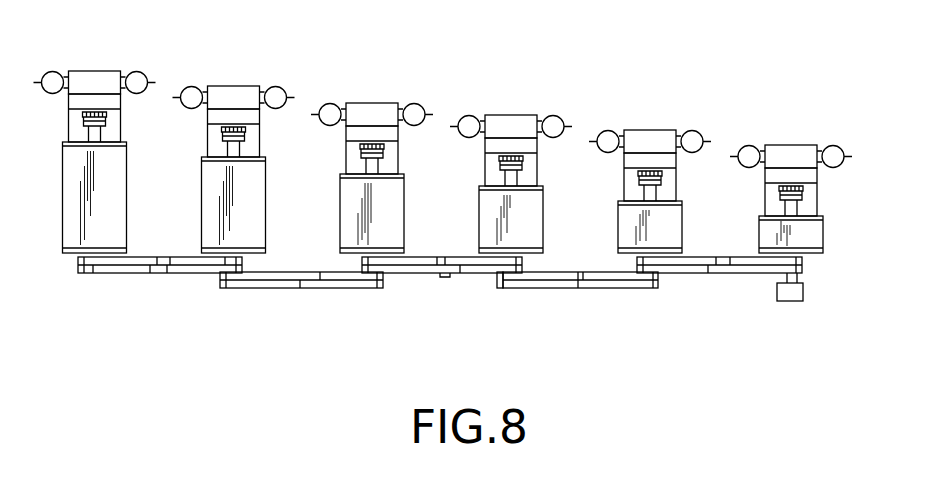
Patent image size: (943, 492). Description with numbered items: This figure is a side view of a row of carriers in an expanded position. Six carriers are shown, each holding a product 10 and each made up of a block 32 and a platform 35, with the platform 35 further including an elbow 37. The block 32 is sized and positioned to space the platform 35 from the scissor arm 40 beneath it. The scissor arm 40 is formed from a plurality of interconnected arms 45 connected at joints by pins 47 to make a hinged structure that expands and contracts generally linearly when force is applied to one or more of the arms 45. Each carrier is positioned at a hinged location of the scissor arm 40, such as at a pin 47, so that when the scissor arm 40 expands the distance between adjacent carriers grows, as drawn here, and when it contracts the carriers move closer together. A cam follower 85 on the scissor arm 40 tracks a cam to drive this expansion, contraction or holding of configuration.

The product 10 is at (131, 72).
The block 32 is at (118, 206).
The platform 35 is at (259, 117).
The elbow 37 is at (790, 154).
The scissor arm 40 is at (185, 274).
The arm 45 is at (615, 285).
The pin 47 is at (505, 289).
The cam follower 85 is at (788, 294).